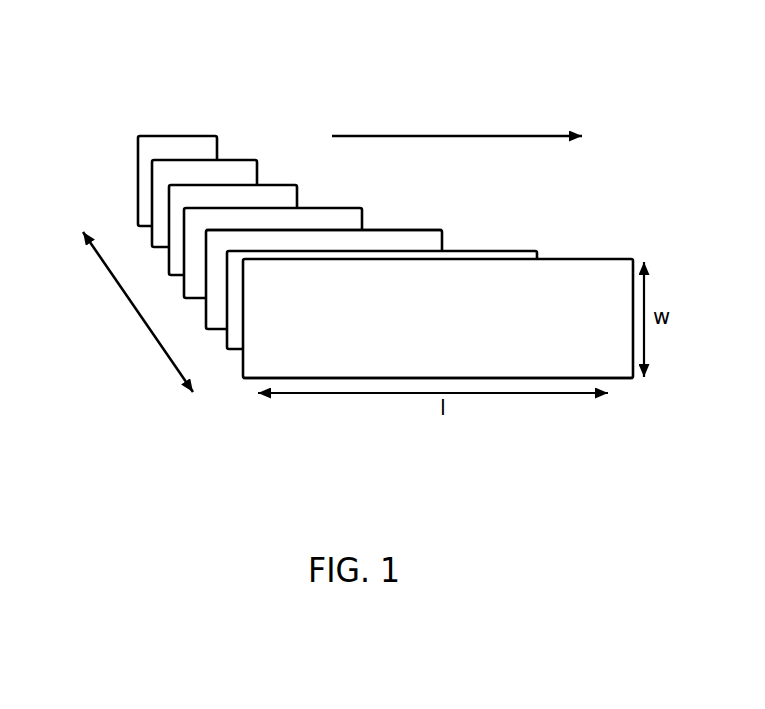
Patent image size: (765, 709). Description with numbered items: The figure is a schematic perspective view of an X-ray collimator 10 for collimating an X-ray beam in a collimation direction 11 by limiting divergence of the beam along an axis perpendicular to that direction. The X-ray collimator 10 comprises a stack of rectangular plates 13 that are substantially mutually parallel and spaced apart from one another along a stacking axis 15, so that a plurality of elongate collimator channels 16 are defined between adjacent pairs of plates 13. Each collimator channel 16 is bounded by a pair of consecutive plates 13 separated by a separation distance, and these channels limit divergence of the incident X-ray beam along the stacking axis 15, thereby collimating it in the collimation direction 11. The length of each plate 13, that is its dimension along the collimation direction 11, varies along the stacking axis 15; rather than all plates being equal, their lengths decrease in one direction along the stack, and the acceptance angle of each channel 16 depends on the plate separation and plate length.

The X-ray collimator 10 is at (537, 432).
The collimation direction 11 is at (470, 136).
The rectangular plates 13 is at (543, 378).
The stacking axis 15 is at (158, 340).
The elongate collimator channels 16 is at (380, 220).